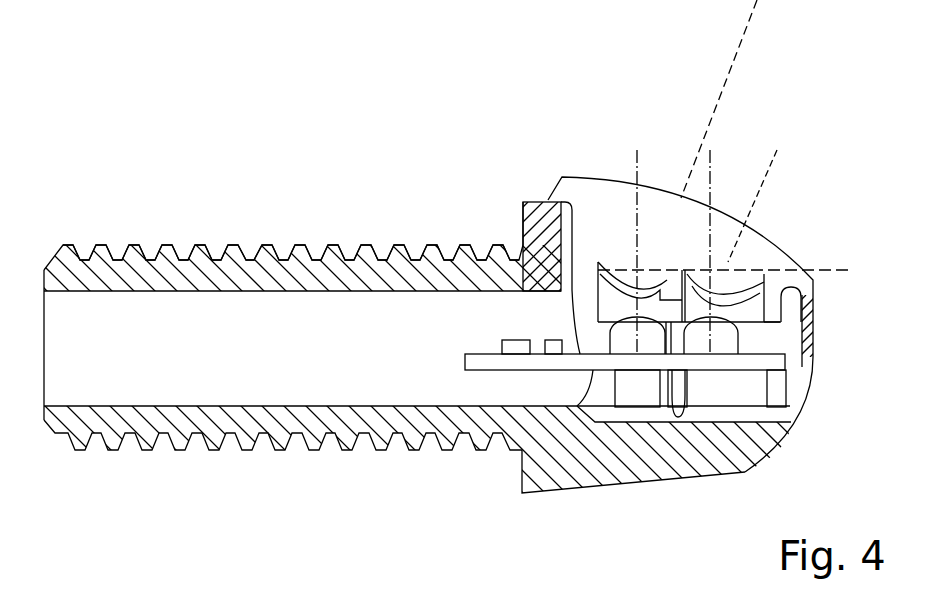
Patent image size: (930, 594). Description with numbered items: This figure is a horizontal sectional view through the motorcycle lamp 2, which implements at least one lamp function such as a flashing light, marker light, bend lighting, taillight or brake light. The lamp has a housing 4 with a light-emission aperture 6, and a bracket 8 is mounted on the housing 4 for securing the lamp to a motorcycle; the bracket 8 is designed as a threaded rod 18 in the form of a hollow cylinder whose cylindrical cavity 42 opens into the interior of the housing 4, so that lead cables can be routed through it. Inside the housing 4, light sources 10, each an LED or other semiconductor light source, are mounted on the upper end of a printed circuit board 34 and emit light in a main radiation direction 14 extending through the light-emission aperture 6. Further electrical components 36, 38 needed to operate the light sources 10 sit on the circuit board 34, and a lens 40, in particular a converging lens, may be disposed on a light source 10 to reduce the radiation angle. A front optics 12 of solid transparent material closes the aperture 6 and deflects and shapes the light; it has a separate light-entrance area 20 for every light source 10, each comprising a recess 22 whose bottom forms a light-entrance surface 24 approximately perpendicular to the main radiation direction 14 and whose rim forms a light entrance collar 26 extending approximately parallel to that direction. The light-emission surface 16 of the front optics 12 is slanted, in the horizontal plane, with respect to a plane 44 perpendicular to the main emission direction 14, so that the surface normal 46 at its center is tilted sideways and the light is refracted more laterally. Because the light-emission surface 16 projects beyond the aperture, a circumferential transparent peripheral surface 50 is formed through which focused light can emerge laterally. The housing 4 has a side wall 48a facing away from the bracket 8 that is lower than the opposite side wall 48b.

The motorcycle lamp 2 is at (426, 108).
The housing 4 is at (677, 484).
The light-emission aperture 6 is at (568, 200).
The bracket 8 is at (232, 241).
The light source 10 is at (637, 342).
The front optics 12 is at (673, 233).
The main radiation direction 14 is at (635, 213).
The light-emission surface 16 is at (742, 262).
The threaded rod 18 is at (290, 247).
The light-entrance area 20 is at (802, 301).
The recess 22 is at (750, 314).
The light-entrance surface 24 is at (723, 288).
The light entrance collar 26 is at (754, 300).
The printed circuit board 34 is at (786, 364).
The electrical component 36 is at (628, 390).
The electrical component 38 is at (623, 325).
The lens 40 is at (695, 322).
The cylindrical cavity 42 is at (333, 358).
The plane 44 is at (760, 190).
The surface normal 46 is at (741, 40).
The side wall 48a is at (805, 345).
The side wall 48b is at (520, 240).
The peripheral surface 50 is at (549, 200).